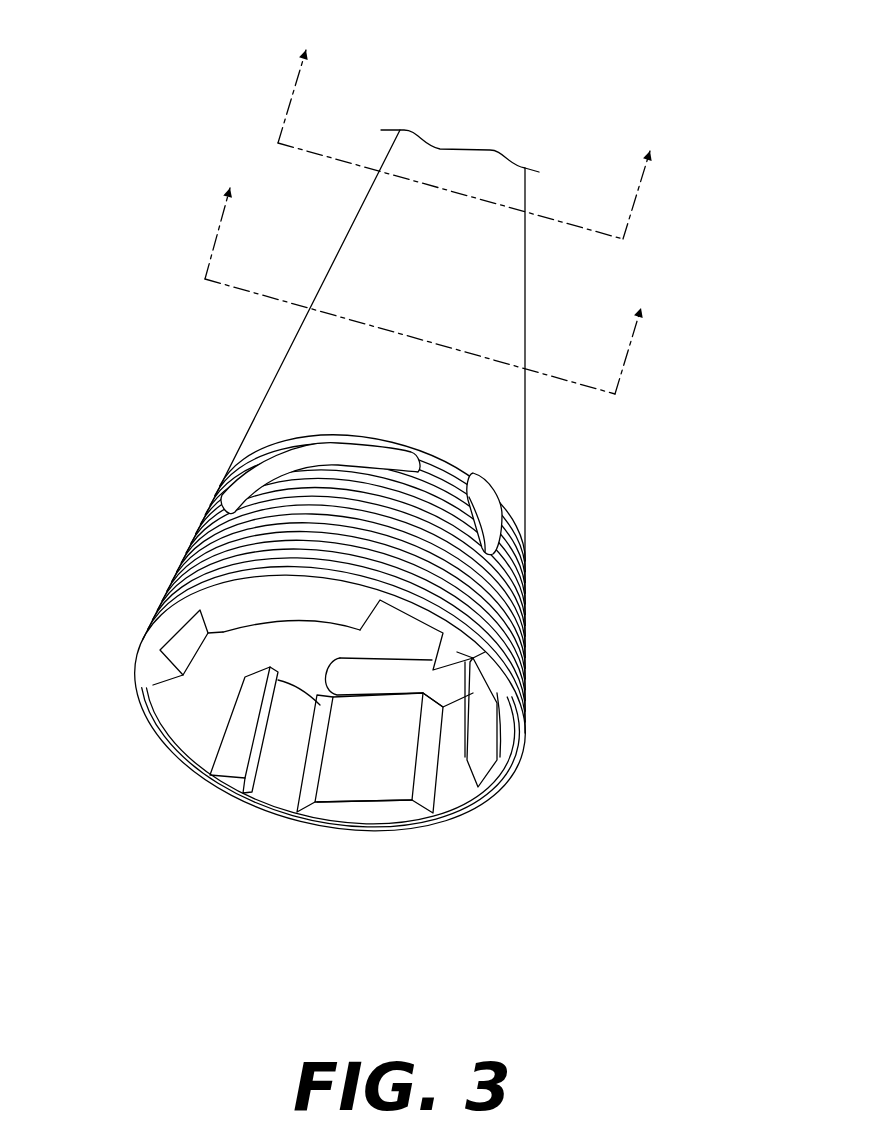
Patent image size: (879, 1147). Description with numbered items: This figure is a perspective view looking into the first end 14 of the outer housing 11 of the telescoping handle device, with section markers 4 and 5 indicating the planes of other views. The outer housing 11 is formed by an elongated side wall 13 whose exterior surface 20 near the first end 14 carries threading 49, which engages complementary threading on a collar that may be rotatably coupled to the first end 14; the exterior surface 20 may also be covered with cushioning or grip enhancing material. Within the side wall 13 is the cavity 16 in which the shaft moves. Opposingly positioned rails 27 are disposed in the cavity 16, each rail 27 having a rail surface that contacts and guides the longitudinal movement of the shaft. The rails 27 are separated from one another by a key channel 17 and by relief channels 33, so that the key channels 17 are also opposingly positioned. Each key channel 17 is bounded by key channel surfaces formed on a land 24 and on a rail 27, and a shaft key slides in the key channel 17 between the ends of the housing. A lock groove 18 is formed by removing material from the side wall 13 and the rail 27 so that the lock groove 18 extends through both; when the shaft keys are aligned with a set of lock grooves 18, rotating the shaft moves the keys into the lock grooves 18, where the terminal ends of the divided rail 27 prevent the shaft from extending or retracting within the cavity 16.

The section line 4- 4 is at (476, 123).
The section line 5- 5 is at (436, 269).
The outer housing 11 is at (530, 128).
The first end 14 is at (170, 486).
The exterior surface 20 is at (268, 443).
The threading 49 is at (497, 612).
The rail 27 is at (245, 602).
The cavity 16 is at (257, 652).
The relief channel 33 is at (183, 635).
The side wall 13 is at (500, 697).
The key channel 17 is at (500, 733).
The land 24 is at (160, 648).
The lock groove 18 is at (313, 693).